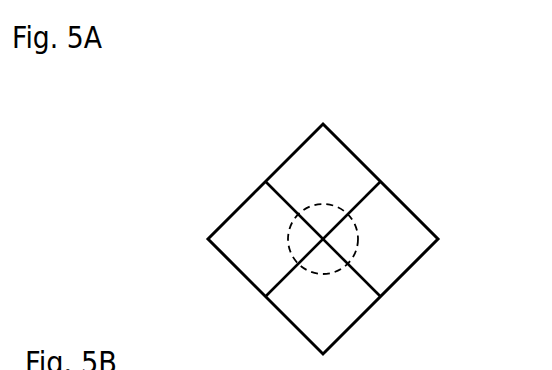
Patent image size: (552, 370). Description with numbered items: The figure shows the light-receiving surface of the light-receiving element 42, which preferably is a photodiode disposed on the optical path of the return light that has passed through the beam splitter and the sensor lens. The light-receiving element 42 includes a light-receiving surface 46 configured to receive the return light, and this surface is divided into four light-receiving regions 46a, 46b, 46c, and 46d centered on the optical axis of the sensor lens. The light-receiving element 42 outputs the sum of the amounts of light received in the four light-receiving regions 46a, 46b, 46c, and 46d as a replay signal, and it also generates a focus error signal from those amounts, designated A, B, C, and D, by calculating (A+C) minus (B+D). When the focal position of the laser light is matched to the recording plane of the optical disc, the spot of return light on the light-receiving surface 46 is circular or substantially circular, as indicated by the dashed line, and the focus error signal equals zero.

The light-receiving element 42 is at (362, 153).
The light-receiving surface 46 is at (400, 255).
The light-receiving region 46a is at (305, 165).
The light-receiving region 46b is at (400, 222).
The light-receiving region 46c is at (333, 322).
The light-receiving region 46d is at (245, 230).